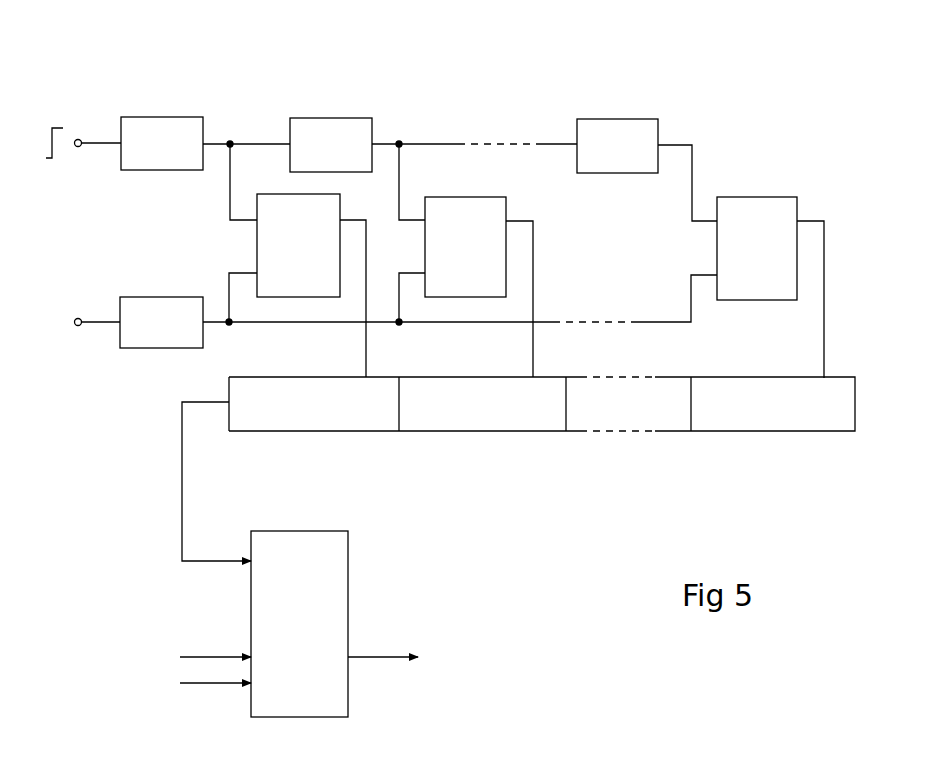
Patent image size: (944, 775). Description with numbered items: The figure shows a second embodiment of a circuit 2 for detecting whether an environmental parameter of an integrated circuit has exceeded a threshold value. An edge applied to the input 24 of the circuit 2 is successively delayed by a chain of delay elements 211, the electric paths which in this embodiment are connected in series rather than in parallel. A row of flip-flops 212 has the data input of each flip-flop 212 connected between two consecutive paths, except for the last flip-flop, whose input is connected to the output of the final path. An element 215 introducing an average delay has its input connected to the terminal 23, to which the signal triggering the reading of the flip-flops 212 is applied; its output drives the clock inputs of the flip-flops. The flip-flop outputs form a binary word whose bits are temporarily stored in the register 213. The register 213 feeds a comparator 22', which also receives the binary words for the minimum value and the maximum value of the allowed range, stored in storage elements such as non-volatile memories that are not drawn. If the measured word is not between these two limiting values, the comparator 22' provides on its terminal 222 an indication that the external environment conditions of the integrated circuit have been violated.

The detection circuit 2 is at (562, 78).
The delay element 211 is at (157, 117).
The flip-flop 212 is at (340, 215).
The register 213 is at (229, 385).
The element introducing an average delay 215 is at (150, 297).
The comparator 22' is at (337, 622).
The comparator output terminal 222 is at (383, 659).
The terminal of application of the triggering signal 23 is at (78, 326).
The circuit input 24 is at (78, 147).